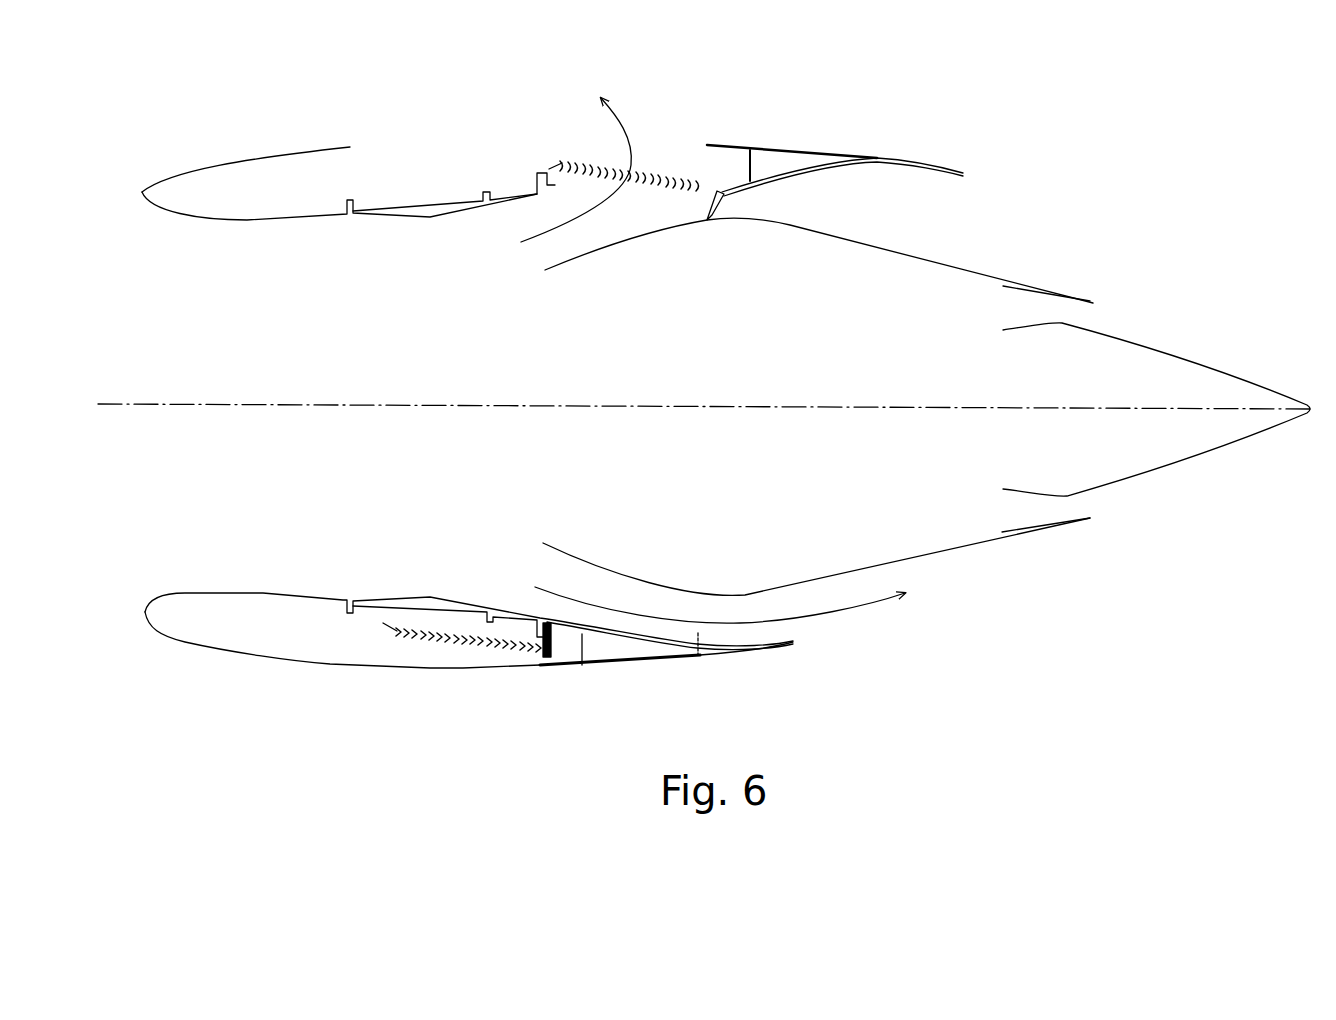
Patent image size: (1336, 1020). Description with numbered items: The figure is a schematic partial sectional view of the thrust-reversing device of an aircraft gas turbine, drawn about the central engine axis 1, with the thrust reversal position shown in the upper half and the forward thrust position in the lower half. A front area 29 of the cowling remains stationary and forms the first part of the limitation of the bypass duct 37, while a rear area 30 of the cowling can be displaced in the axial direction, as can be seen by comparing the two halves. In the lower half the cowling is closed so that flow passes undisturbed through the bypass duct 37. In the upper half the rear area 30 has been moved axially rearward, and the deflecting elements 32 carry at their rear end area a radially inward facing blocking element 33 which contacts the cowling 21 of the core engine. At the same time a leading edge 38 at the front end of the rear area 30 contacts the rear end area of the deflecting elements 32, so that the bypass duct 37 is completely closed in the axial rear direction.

The central engine axis 1 is at (277, 403).
The cowling of the core engine 21 is at (923, 252).
The front area of the cowling 29 is at (267, 175).
The rear area of the cowling 30 is at (893, 158).
The deflecting elements 32 is at (595, 152).
The blocking element 33 is at (712, 215).
The bypass duct 37 is at (443, 270).
The leading edge 38 is at (720, 190).